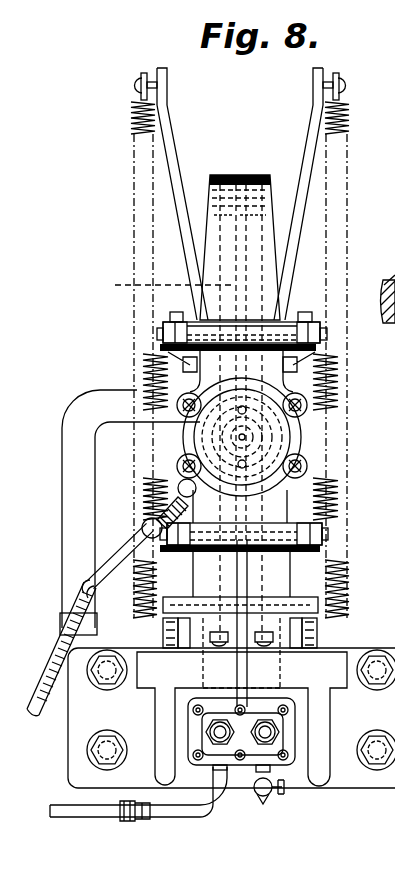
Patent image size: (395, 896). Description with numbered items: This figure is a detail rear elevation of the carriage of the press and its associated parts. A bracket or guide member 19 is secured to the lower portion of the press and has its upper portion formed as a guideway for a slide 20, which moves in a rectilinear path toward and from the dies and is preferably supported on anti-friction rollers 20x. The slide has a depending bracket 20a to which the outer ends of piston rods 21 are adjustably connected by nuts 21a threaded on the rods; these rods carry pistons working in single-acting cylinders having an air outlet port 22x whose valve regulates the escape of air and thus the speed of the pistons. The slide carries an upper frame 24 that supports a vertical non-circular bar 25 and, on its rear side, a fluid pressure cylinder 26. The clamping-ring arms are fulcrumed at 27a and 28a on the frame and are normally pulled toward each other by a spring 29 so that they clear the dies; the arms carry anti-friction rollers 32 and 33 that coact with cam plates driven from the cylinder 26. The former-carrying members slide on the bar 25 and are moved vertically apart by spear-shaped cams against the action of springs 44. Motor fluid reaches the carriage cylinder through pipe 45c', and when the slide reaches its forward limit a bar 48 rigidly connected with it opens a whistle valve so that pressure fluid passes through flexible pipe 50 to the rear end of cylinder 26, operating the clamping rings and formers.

The bracket or guide member 19 is at (152, 678).
The slide 20 is at (273, 605).
The anti-friction rollers 20x is at (344, 632).
The depending bracket 20a is at (250, 677).
The piston rods 21 is at (216, 732).
The nuts 21a is at (333, 766).
The air outlet port 22x is at (270, 793).
The upper frame 24 is at (215, 243).
The vertical non-circular bar 25 is at (160, 286).
The fluid pressure cylinder 26 is at (288, 438).
The fulcrum 27a is at (238, 623).
The fulcrum 28a is at (160, 334).
The spring 29 is at (143, 380).
The anti-friction rollers 32 is at (180, 524).
The anti-friction rollers 33 is at (176, 313).
The springs 44 is at (133, 130).
The pipe 45c' is at (138, 813).
The bar 48 is at (62, 550).
The flexible pipe 50 is at (58, 622).